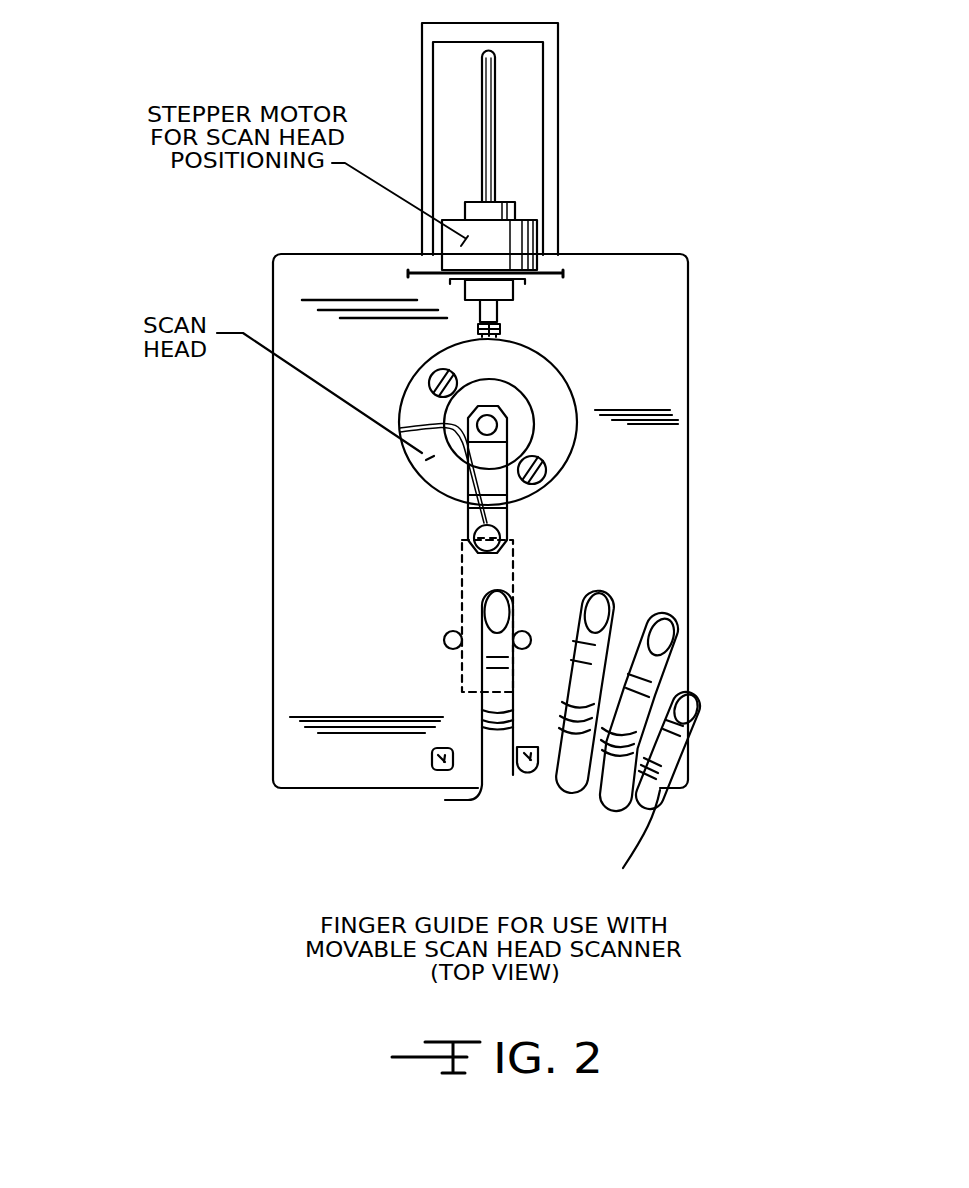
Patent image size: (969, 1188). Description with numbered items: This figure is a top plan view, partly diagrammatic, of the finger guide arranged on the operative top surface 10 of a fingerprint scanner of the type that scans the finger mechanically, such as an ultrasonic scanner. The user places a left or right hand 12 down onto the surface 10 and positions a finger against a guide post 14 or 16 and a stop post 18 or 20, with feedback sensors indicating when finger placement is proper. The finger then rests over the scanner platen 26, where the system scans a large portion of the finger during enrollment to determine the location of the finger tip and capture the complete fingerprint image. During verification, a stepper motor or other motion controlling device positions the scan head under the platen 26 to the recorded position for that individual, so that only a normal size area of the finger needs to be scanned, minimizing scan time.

The top surface 10 is at (400, 647).
The hand 12 is at (530, 803).
The guide post 14 is at (446, 632).
The guide post 16 is at (528, 633).
The stop post 18 is at (438, 762).
The stop post 20 is at (538, 778).
The scanner platen 26 is at (507, 561).